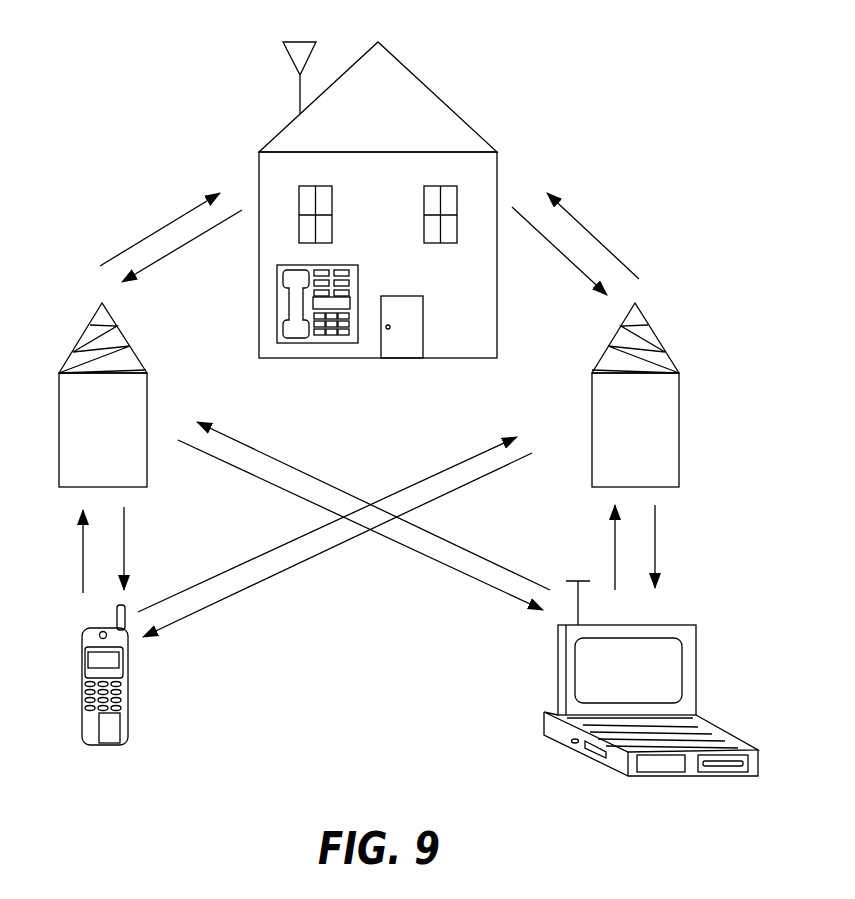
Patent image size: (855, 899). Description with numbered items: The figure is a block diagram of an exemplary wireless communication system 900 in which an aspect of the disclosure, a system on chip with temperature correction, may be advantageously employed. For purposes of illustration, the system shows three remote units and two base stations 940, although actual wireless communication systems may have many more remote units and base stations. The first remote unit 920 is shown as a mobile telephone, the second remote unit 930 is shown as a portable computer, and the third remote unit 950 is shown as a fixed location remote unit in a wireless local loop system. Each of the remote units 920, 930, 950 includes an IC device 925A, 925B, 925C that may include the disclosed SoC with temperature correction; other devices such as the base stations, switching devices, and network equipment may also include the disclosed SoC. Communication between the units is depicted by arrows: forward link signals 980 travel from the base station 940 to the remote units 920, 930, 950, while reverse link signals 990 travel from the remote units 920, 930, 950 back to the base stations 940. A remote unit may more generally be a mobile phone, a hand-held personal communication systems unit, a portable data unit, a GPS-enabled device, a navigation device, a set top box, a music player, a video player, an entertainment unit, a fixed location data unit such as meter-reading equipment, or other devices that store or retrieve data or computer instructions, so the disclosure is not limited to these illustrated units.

The wireless communication system 900 is at (120, 80).
The remote unit 920 is at (84, 636).
The IC device 925A is at (112, 734).
The IC device 925B is at (342, 301).
The IC device 925C is at (666, 772).
The remote unit 930 is at (678, 625).
The base station 940 is at (83, 335).
The remote unit 950 is at (277, 313).
The forward link signals 980 is at (165, 226).
The reverse link signals 990 is at (172, 255).